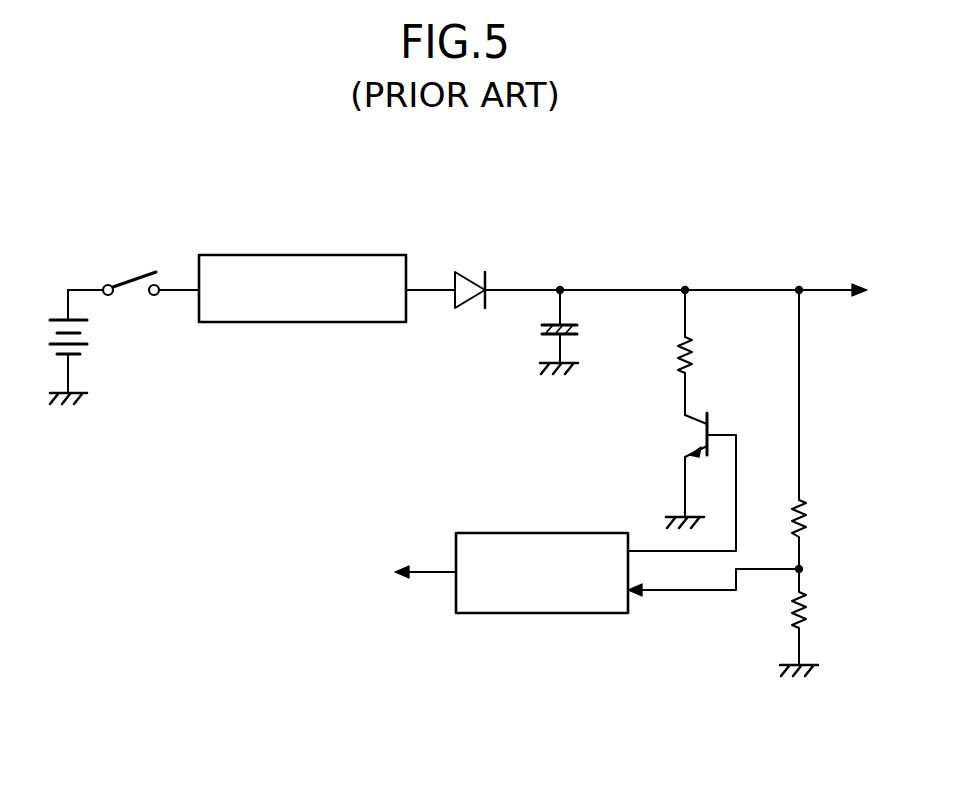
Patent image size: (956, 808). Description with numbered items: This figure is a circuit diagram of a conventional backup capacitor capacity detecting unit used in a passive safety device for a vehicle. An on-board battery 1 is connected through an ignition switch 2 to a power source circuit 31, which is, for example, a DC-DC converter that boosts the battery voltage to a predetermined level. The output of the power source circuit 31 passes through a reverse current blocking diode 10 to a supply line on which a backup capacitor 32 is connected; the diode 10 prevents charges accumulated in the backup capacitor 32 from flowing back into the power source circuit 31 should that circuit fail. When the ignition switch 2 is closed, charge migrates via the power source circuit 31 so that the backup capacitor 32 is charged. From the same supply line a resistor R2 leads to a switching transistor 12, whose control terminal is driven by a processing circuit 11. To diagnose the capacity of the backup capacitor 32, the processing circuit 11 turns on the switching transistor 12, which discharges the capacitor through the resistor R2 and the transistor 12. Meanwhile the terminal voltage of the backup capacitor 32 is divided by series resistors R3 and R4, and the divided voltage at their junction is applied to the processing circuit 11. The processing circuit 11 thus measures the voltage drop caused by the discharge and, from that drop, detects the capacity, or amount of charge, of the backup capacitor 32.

The on-board battery 1 is at (95, 340).
The ignition switch 2 is at (128, 272).
The power source circuit 31 is at (307, 324).
The reverse current blocking diode 10 is at (476, 273).
The backup capacitor 32 is at (586, 333).
The switching transistor 12 is at (678, 436).
The processing circuit 11 is at (542, 531).
The resistor R2 is at (704, 352).
The resistor R3 is at (819, 429).
The resistor R4 is at (813, 621).